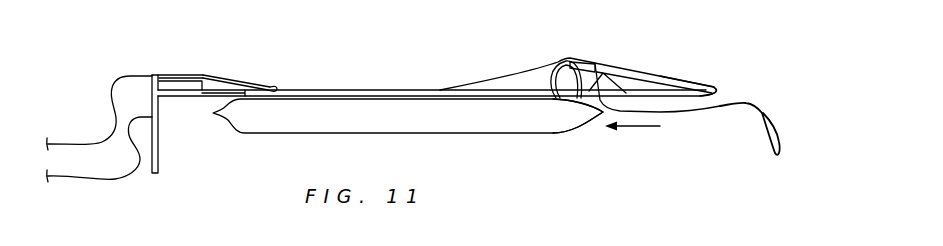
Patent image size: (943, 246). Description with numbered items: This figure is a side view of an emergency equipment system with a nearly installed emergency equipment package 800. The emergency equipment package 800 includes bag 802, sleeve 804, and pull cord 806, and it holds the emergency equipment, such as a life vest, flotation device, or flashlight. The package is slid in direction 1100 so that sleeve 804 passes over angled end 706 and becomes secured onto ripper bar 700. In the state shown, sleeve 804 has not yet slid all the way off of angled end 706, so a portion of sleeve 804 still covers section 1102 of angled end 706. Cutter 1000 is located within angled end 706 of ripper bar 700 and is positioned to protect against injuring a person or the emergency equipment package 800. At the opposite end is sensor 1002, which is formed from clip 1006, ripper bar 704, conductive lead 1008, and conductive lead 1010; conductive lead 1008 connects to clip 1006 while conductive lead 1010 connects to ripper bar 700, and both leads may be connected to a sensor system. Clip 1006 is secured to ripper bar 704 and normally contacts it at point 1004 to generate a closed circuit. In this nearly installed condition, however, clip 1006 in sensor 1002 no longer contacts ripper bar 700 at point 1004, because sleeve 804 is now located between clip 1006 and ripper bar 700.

The ripper bar 700 is at (492, 90).
The ripper bar 704 is at (158, 139).
The angled end 706 is at (690, 80).
The emergency equipment package 800 is at (465, 134).
The bag 802 is at (568, 134).
The sleeve 804 is at (530, 77).
The pull cord 806 is at (763, 106).
The cutter 1000 is at (616, 75).
The sensor 1002 is at (182, 74).
The point 1004 is at (284, 88).
The clip 1006 is at (238, 82).
The conductive lead 1008 is at (113, 82).
The conductive lead 1010 is at (104, 179).
The direction 1100 is at (637, 128).
The section 1102 is at (598, 54).